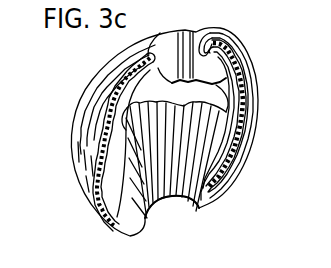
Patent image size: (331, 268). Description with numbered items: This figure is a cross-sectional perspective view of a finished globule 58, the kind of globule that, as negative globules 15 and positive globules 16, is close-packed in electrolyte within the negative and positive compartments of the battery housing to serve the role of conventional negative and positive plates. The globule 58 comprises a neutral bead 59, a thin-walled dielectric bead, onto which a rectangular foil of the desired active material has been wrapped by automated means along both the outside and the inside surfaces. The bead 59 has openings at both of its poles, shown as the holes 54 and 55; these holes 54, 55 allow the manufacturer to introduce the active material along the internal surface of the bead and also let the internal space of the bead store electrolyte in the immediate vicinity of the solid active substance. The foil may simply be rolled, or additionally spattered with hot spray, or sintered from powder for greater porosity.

The negative globules 15 is at (100, 67).
The positive globules 16 is at (82, 88).
The hole 54 is at (193, 34).
The hole 55 is at (175, 198).
The globule 58 is at (253, 58).
The neutral bead 59 is at (245, 134).